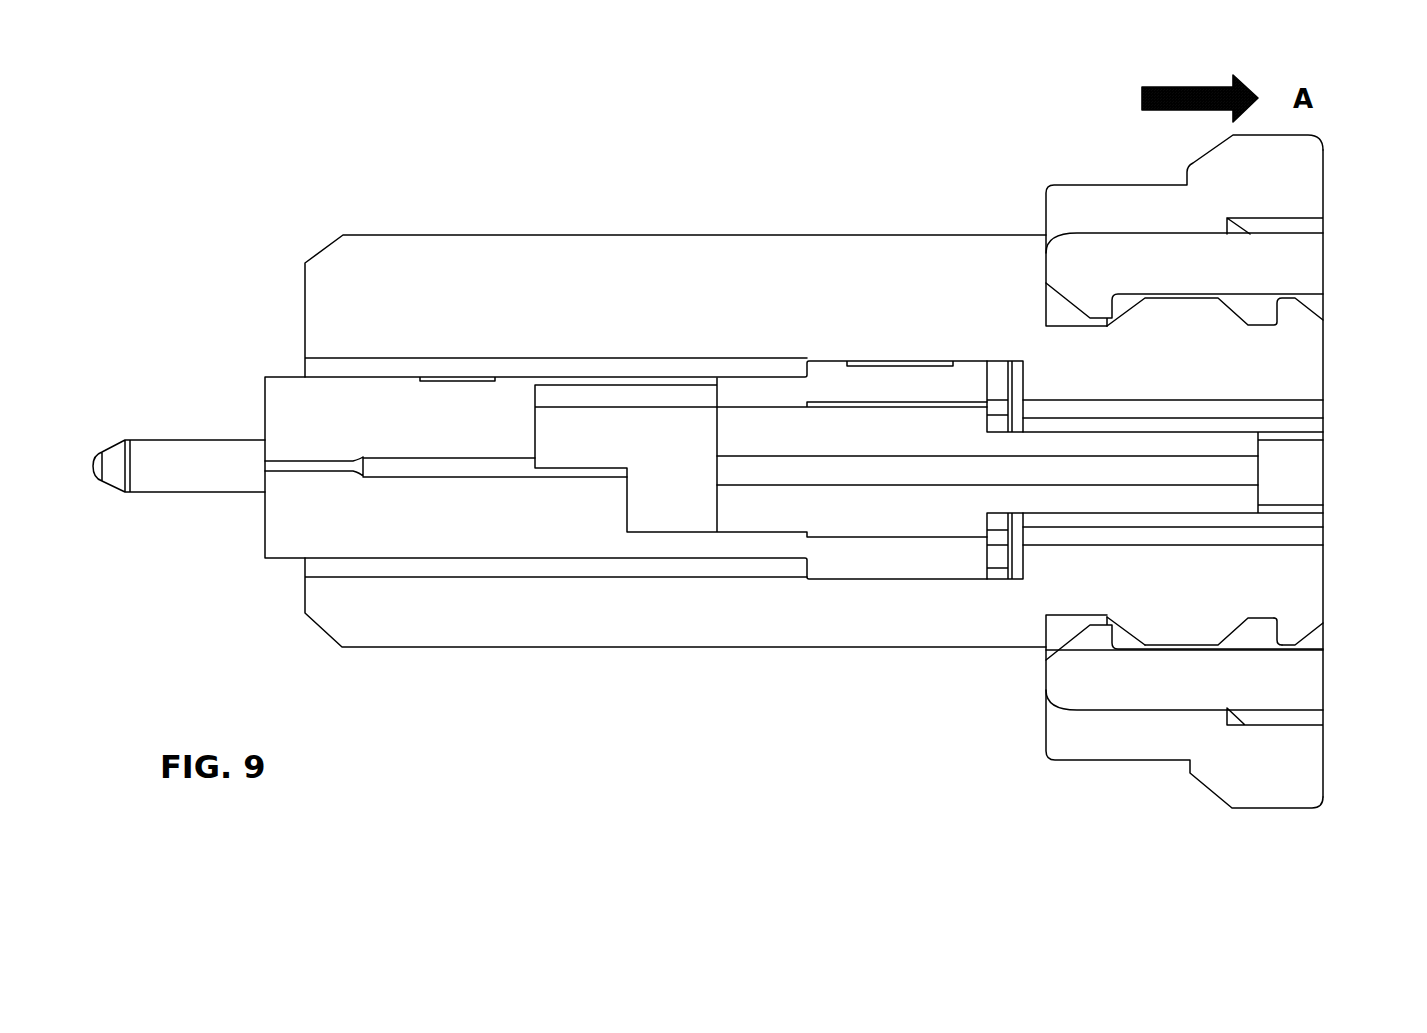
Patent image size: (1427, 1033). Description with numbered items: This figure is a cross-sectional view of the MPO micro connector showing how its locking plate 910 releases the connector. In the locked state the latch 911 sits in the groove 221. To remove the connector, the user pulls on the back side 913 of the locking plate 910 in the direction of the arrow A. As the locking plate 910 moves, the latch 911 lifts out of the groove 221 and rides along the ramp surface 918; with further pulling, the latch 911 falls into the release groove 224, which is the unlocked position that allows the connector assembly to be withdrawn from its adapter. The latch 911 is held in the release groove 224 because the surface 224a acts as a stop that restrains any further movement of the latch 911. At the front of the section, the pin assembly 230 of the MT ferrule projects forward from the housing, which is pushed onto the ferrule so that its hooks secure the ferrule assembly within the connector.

The flat pin assembly 230 is at (125, 437).
The groove 221 is at (1063, 308).
The latch 911 is at (1098, 300).
The locking plate 910 is at (1167, 163).
The back side 913 is at (1333, 163).
The release groove 224 is at (1258, 312).
The ramp surface 918 is at (1127, 632).
The surface 224a is at (1277, 638).